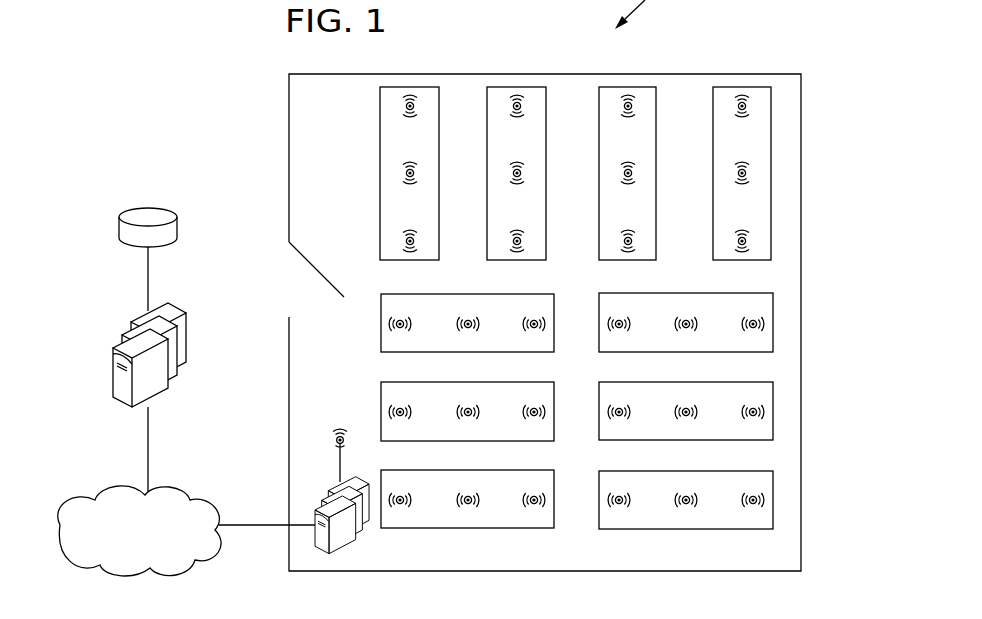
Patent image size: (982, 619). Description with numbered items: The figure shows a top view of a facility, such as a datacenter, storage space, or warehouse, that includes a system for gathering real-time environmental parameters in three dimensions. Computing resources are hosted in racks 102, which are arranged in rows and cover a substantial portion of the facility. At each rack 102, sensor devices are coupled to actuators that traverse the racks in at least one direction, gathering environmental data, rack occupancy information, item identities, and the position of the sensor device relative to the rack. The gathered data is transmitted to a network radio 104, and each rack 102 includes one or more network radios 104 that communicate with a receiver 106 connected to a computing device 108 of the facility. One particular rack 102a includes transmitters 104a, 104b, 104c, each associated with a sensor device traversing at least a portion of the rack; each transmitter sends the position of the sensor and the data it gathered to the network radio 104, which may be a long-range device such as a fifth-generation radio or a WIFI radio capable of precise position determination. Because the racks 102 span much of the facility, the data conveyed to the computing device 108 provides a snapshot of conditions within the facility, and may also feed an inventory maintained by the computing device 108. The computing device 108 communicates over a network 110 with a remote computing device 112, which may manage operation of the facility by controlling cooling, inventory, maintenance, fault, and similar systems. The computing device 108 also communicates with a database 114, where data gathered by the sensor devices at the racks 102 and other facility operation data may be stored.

The rack 102 is at (441, 118).
The rack 102a is at (772, 118).
The network radio 104 is at (414, 98).
The transmitter 104a is at (746, 98).
The transmitter 104b is at (755, 174).
The transmitter 104c is at (755, 241).
The receiver 106 is at (330, 448).
The computing device 108 is at (335, 535).
The network 110 is at (183, 490).
The remote computing device 112 is at (160, 367).
The database 114 is at (150, 214).